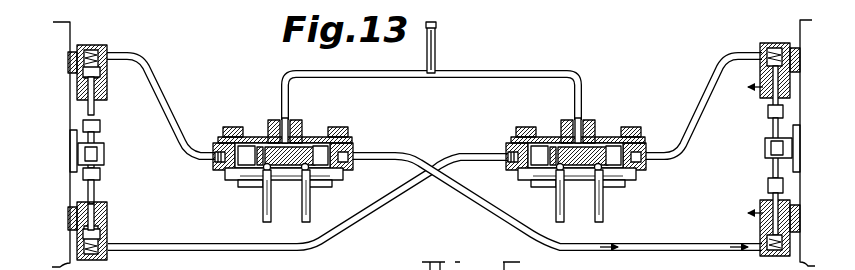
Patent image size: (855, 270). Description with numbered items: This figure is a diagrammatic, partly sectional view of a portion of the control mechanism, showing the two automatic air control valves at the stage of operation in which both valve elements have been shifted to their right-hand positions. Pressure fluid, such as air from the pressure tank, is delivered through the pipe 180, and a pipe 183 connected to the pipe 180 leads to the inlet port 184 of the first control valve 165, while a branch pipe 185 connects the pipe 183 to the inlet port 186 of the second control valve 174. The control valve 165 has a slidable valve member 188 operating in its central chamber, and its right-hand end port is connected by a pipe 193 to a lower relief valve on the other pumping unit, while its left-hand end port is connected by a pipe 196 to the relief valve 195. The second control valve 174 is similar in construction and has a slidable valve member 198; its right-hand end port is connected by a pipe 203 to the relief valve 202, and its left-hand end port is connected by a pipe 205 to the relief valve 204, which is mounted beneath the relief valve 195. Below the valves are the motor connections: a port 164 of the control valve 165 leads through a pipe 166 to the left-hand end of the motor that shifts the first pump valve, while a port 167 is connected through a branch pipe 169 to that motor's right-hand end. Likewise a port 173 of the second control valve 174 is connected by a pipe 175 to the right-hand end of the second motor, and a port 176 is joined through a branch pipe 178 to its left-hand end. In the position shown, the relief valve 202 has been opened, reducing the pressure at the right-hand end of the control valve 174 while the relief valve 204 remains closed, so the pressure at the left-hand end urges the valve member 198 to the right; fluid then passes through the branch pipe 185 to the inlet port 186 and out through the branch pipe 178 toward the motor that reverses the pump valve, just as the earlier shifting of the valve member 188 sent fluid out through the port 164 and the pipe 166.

The relief valve 195 is at (100, 45).
The pipe 196 is at (166, 106).
The relief valve 204 is at (100, 208).
The pipe 205 is at (206, 242).
The port 164 is at (264, 190).
The pipe 166 is at (264, 219).
The inlet port 184 is at (278, 120).
The slidable valve member 188 is at (302, 128).
The control valve 165 is at (341, 129).
The pipe 183 is at (394, 70).
The pipe 180 is at (436, 32).
The branch pipe 185 is at (534, 70).
The inlet port 186 is at (554, 123).
The slidable valve member 198 is at (593, 119).
The second control valve 174 is at (585, 146).
The port 167 is at (308, 172).
The branch pipe 169 is at (310, 211).
The port 176 is at (541, 188).
The port 173 is at (625, 187).
The pipe 175 is at (616, 200).
The branch pipe 178 is at (577, 204).
The pipe 193 is at (651, 254).
The relief valve 202 is at (775, 42).
The pipe 203 is at (718, 82).